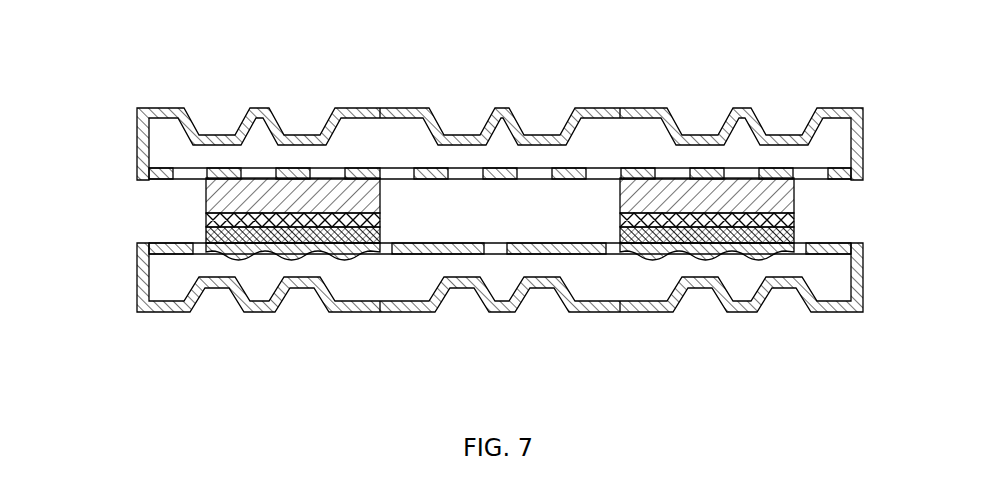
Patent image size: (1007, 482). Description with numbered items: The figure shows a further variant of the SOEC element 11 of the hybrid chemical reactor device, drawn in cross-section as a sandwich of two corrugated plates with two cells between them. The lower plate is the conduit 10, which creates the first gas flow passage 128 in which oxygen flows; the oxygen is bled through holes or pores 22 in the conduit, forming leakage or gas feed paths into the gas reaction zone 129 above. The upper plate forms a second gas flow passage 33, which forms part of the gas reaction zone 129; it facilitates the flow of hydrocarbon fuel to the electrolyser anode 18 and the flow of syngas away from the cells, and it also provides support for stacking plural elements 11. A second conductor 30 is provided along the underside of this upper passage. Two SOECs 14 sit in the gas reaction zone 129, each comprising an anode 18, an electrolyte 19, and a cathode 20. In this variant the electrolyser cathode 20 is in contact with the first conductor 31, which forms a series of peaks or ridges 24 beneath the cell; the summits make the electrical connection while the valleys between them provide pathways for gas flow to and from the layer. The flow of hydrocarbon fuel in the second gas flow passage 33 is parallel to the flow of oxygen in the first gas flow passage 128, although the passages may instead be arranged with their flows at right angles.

The SOEC element 11 is at (148, 82).
The conduit 10 is at (455, 308).
The second gas flow passage 33 is at (360, 156).
The second conductor 30 is at (500, 168).
The gas reaction zone 129 is at (464, 211).
The first gas flow passage 128 is at (355, 286).
The SOEC 14 is at (62, 203).
The anode 18 is at (206, 197).
The electrolyte 19 is at (206, 219).
The cathode 20 is at (206, 236).
The holes or pores 22 is at (490, 254).
The first conductor 31 is at (595, 254).
The peaks or ridges 24 is at (733, 256).